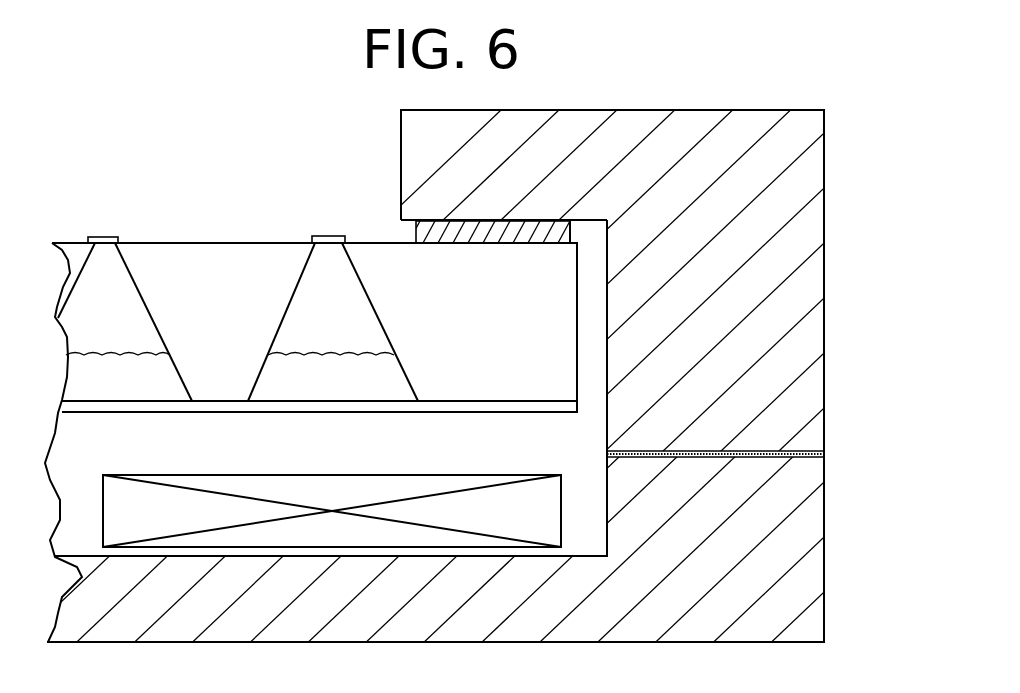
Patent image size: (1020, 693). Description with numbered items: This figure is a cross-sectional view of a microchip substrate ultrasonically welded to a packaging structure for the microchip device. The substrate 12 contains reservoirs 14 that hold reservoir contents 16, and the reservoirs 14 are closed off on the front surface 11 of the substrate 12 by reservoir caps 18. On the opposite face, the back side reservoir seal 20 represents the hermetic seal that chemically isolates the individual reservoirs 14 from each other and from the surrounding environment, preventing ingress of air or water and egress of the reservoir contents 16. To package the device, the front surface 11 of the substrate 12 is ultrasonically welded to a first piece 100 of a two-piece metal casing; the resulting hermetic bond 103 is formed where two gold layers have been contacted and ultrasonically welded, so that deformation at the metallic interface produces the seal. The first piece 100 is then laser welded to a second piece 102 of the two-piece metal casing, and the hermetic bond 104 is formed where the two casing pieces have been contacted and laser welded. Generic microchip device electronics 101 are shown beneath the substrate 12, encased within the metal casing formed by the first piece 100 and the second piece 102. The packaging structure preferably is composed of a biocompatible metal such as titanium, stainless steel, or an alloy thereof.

The front surface 11 is at (222, 242).
The substrate 12 is at (507, 339).
The reservoirs 14 is at (118, 394).
The reservoir contents 16 is at (118, 328).
The reservoir caps 18 is at (107, 233).
The back side reservoir seal 20 is at (180, 405).
The first piece of two-piece metal casing 100 is at (780, 196).
The microchip device electronics 101 is at (300, 485).
The second piece of two-piece metal casing 102 is at (782, 548).
The hermetic bond 103 is at (421, 227).
The hermetic bond 104 is at (824, 453).